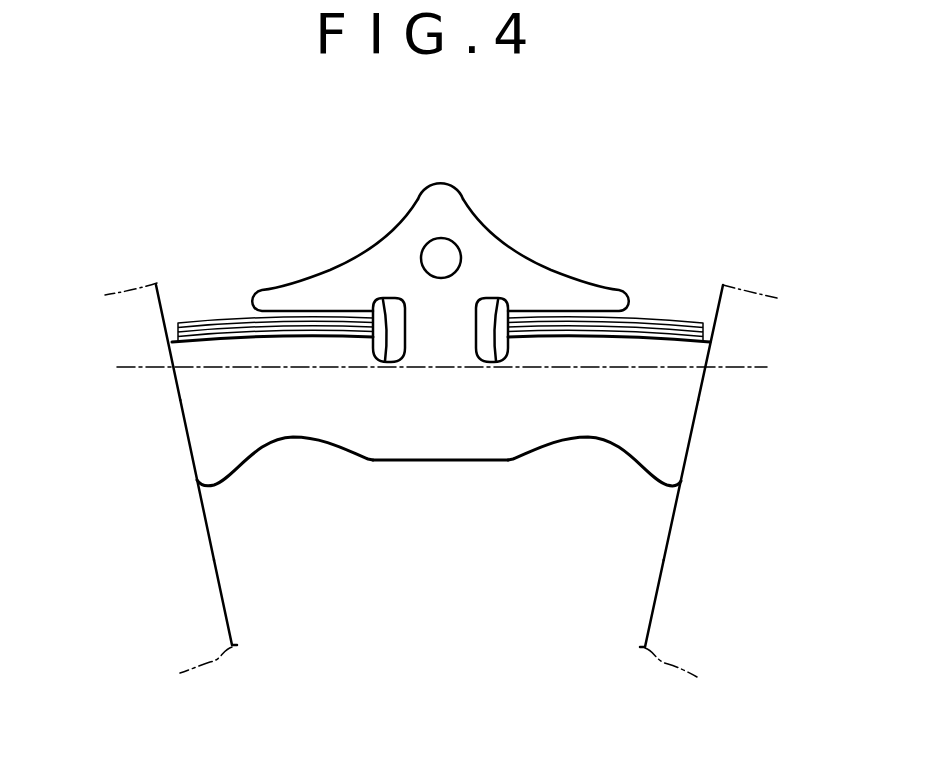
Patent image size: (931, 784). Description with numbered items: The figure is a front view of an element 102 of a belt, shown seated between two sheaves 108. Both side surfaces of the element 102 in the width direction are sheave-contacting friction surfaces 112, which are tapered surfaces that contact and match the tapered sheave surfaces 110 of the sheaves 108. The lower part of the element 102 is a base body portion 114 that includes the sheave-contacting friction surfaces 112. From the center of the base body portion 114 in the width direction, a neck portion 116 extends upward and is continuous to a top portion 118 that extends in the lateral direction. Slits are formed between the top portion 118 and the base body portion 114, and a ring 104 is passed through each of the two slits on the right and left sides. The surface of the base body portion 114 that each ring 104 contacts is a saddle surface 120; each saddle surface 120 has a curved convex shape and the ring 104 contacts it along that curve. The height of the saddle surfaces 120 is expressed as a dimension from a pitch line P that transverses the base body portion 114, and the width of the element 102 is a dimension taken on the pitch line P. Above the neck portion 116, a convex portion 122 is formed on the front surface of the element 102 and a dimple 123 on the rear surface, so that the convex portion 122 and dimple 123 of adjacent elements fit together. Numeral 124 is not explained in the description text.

The element 102 is at (436, 236).
The ring 104 is at (197, 332).
The sheave 108 is at (207, 625).
The tapered sheave surface 110 is at (210, 528).
The sheave-contacting friction surface 112 is at (183, 417).
The base body portion 114 is at (450, 440).
The neck portion 116 is at (453, 323).
The top portion 118 is at (353, 258).
The saddle surface 120 is at (247, 347).
The convex portion 122 is at (432, 238).
The dimple 123 is at (378, 302).
The curved portion of piston top 124 is at (358, 455).
The pitch line P is at (740, 370).